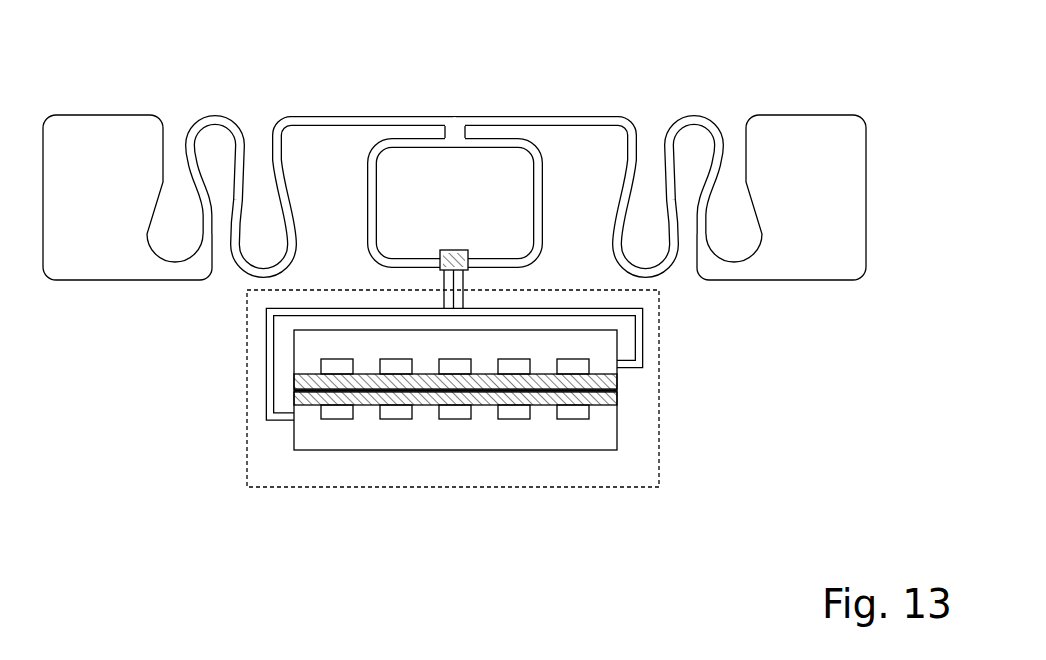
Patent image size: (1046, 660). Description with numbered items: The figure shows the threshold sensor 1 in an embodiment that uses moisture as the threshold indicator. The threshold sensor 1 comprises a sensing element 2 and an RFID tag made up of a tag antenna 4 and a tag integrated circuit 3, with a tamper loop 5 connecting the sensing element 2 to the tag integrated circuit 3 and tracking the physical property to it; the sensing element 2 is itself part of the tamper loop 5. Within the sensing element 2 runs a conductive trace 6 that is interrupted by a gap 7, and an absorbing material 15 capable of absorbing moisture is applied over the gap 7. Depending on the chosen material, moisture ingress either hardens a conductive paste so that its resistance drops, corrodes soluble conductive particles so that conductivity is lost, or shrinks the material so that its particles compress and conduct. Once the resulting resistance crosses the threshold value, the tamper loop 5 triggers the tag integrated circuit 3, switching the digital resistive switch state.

The threshold sensor 1 is at (825, 65).
The sensing element 2 is at (645, 430).
The tag integrated circuit 3 is at (453, 249).
The tag antenna 4 is at (640, 129).
The tamper loop 5 is at (508, 486).
The conductive trace 6 is at (643, 330).
The gap 7 is at (617, 391).
The absorbing material 15 is at (292, 380).